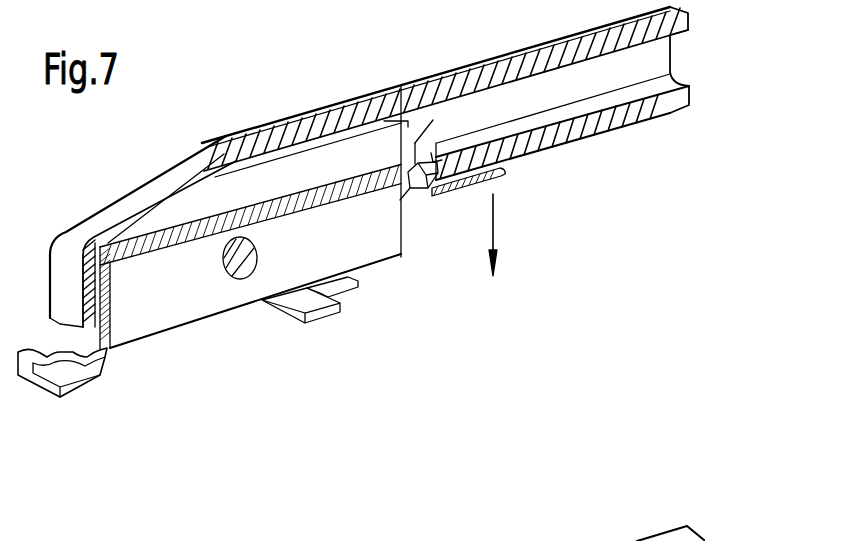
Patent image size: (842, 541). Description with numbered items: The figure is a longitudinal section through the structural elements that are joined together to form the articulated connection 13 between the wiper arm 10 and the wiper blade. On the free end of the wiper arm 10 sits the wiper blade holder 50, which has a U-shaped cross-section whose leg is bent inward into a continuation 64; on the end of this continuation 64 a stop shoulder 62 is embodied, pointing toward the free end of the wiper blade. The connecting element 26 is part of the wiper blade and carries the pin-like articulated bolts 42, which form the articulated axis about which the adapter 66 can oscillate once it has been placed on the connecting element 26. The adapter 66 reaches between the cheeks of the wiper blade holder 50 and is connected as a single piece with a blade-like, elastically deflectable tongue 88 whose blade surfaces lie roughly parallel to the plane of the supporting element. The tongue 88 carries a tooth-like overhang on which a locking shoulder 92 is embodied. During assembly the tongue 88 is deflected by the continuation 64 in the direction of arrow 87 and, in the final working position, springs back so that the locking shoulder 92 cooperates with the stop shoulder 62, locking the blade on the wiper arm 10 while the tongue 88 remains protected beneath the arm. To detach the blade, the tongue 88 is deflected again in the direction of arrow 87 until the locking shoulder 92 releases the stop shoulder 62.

The wiper arm 10 is at (637, 129).
The articulated connection 13 is at (211, 323).
The connecting element 26 is at (231, 316).
The articulated bolts 42 is at (245, 262).
The wiper blade holder 50 is at (206, 136).
The stop shoulder 62 is at (420, 150).
The continuation 64 is at (577, 117).
The adapter 66 is at (414, 148).
The arrow 87 is at (494, 226).
The tongue 88 is at (504, 174).
The locking shoulder 92 is at (452, 197).